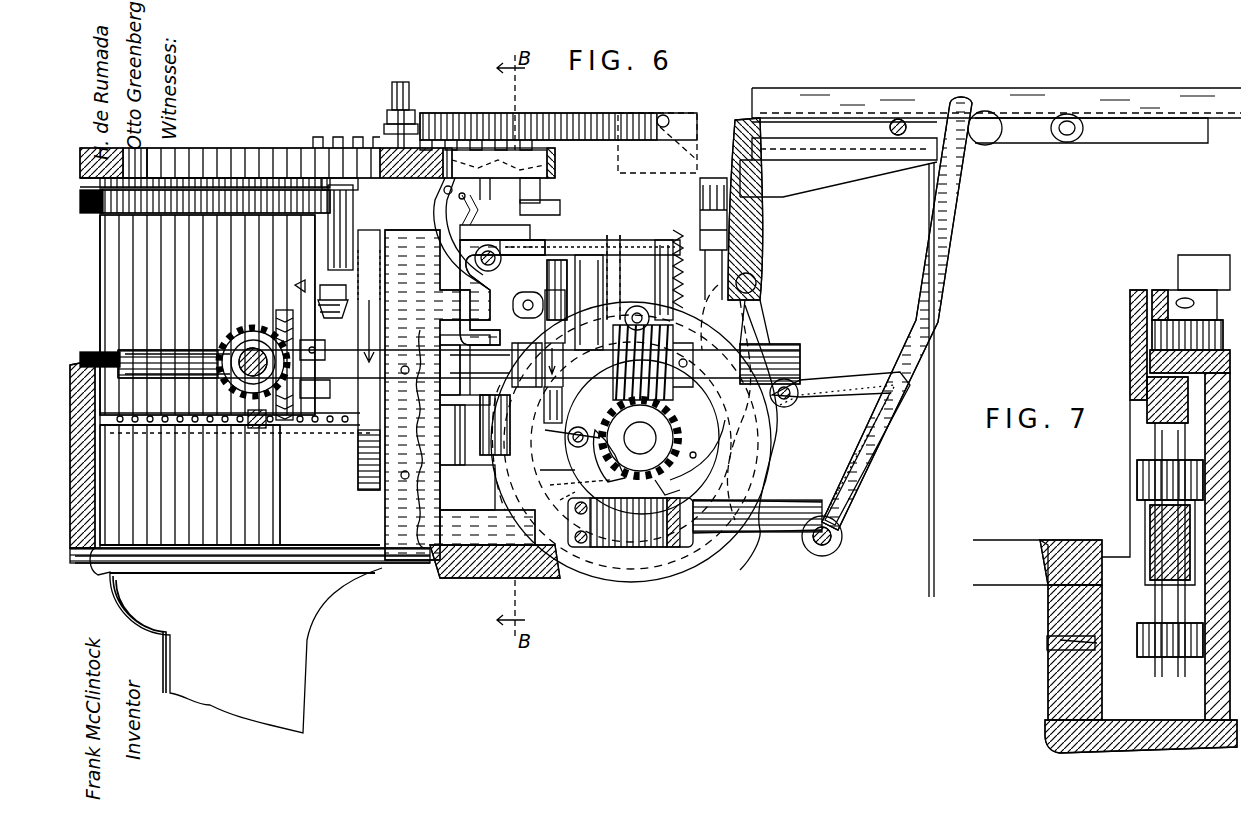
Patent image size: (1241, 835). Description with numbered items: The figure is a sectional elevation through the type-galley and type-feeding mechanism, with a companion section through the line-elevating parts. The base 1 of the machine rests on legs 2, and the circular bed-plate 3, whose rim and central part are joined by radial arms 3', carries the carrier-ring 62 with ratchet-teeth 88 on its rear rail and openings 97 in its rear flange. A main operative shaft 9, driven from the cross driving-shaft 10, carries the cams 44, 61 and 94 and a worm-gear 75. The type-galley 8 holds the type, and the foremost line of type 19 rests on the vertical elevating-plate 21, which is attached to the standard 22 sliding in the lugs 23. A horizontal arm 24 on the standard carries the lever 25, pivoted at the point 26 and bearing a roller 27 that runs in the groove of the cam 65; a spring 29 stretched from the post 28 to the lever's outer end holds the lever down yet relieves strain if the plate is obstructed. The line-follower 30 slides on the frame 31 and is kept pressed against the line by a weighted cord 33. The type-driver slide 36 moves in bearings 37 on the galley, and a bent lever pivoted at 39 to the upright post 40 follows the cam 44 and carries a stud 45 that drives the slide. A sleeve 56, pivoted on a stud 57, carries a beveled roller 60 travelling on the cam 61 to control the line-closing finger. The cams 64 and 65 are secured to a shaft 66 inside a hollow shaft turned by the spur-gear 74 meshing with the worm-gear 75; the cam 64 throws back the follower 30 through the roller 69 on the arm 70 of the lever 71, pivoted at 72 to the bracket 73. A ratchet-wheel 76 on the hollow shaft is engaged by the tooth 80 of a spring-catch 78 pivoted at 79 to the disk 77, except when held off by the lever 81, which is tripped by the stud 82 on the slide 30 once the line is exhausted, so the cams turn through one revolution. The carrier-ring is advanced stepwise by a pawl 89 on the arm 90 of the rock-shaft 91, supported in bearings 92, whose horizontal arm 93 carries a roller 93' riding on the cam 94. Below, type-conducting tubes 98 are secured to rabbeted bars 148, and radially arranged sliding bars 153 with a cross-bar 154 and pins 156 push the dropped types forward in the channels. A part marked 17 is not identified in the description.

In FIG. 6, the base 1 is at (250, 524).
In FIG. 7, the base 1 is at (1063, 540).
In FIG. 6, the legs 2 is at (236, 640).
In FIG. 6, the circular bed-plate 3 is at (317, 157).
In FIG. 6, the radial arms 3' is at (360, 120).
In FIG. 6, the type-galley 8 is at (996, 91).
In FIG. 6, the main operative shaft 9 is at (808, 330).
In FIG. 6, the cross driving-shaft 10 is at (253, 350).
In FIG. 6, the pulley bracket 17 is at (712, 239).
In FIG. 6, the line of type 19 is at (578, 128).
In FIG. 7, the line of type 19 is at (1147, 290).
In FIG. 6, the elevating-plate 21 is at (655, 150).
In FIG. 7, the elevating-plate 21 is at (1135, 355).
In FIG. 6, the standard 22 is at (492, 392).
In FIG. 7, the standard 22 is at (1157, 600).
In FIG. 6, the lugs 23 is at (467, 399).
In FIG. 7, the lugs 23 is at (1165, 476).
In FIG. 6, the horizontal arm 24 is at (533, 406).
In FIG. 7, the horizontal arm 24 is at (1160, 540).
In FIG. 6, the lever 25 is at (589, 302).
In FIG. 6, the pivot point 26 is at (513, 310).
In FIG. 6, the roller 27 is at (622, 318).
In FIG. 6, the post 28 is at (662, 278).
In FIG. 6, the spring 29 is at (683, 278).
In FIG. 6, the line-follower 30 is at (1150, 137).
In FIG. 6, the frame 31 is at (838, 140).
In FIG. 6, the cord 33 is at (934, 385).
In FIG. 6, the type-driver slide 36 is at (412, 122).
In FIG. 6, the bearings 37 is at (402, 103).
In FIG. 6, the pivot 39 is at (405, 290).
In FIG. 6, the upright post 40 is at (427, 392).
In FIG. 6, the cam 44 is at (352, 450).
In FIG. 6, the stud 45 is at (520, 193).
In FIG. 6, the sleeve 56 is at (328, 218).
In FIG. 6, the stud 57 is at (340, 223).
In FIG. 6, the beveled roller 60 is at (312, 300).
In FIG. 6, the cam 61 is at (330, 396).
In FIG. 6, the carrier-ring 62 is at (510, 150).
In FIG. 6, the cam 64 is at (503, 570).
In FIG. 6, the cam 65 is at (712, 312).
In FIG. 6, the shaft 66 is at (640, 438).
In FIG. 6, the roller 69 is at (795, 388).
In FIG. 6, the arm 70 is at (830, 410).
In FIG. 6, the lever 71 is at (938, 275).
In FIG. 6, the pivot 72 is at (832, 538).
In FIG. 6, the bracket 73 is at (755, 535).
In FIG. 6, the spur-gear 74 is at (668, 480).
In FIG. 6, the worm-gear 75 is at (615, 355).
In FIG. 6, the ratchet-wheel 76 is at (690, 452).
In FIG. 6, the disk 77 is at (573, 487).
In FIG. 6, the spring-catch 78 is at (770, 435).
In FIG. 6, the pivot point 79 is at (570, 438).
In FIG. 6, the tooth 80 is at (612, 500).
In FIG. 6, the lever 81 is at (728, 118).
In FIG. 6, the stud 82 is at (898, 118).
In FIG. 6, the ratchet-teeth 88 is at (318, 155).
In FIG. 6, the pawl 89 is at (445, 178).
In FIG. 6, the arm 90 is at (470, 268).
In FIG. 6, the rock-shaft 91 is at (495, 218).
In FIG. 6, the bearings 92 is at (501, 201).
In FIG. 6, the horizontal arm 93 is at (590, 226).
In FIG. 6, the roller 93' is at (573, 291).
In FIG. 6, the cam 94 is at (537, 365).
In FIG. 6, the openings 97 is at (338, 137).
In FIG. 6, the type-conducting tubes 98 is at (103, 283).
In FIG. 6, the rabbeted bars 148 is at (85, 213).
In FIG. 6, the sliding bars 153 is at (255, 430).
In FIG. 6, the cross-bar 154 is at (293, 430).
In FIG. 6, the pins 156 is at (335, 430).